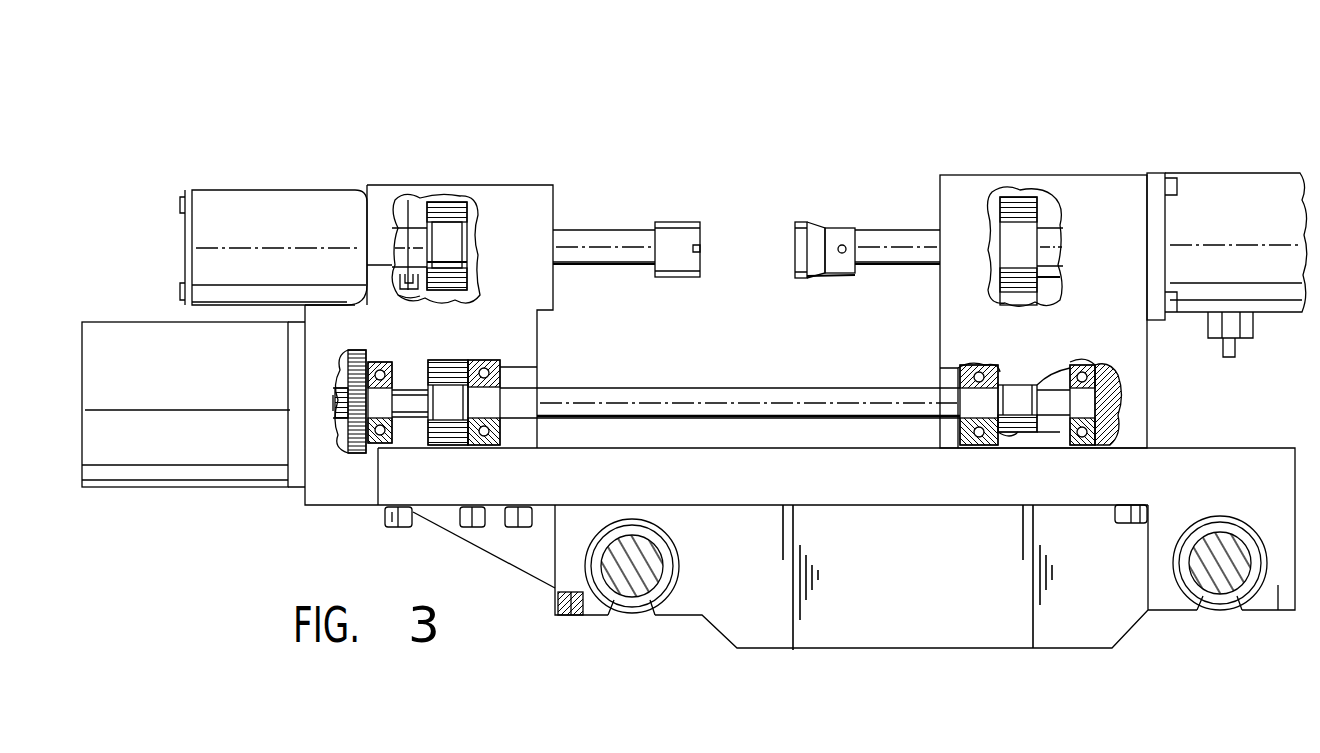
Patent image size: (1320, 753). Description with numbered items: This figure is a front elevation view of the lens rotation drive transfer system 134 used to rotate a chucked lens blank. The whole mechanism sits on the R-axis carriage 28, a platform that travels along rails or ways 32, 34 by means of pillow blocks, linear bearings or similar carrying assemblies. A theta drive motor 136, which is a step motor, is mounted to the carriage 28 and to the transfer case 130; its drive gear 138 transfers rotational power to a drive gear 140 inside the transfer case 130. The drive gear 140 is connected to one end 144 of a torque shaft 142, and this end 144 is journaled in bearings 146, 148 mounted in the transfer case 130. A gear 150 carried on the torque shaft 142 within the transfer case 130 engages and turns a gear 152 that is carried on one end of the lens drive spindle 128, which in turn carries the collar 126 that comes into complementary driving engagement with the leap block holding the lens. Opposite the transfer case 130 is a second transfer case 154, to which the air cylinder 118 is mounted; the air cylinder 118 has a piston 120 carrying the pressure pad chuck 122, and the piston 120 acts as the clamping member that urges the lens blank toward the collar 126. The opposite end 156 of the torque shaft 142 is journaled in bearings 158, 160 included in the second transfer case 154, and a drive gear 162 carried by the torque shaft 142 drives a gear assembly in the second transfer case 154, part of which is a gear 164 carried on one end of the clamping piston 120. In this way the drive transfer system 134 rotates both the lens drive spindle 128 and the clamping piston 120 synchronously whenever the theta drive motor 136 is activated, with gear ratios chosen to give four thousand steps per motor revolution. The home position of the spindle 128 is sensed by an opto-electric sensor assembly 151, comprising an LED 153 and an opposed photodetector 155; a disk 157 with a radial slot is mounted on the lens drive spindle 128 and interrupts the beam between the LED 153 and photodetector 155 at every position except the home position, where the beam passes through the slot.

The R-axis carriage 28 is at (347, 508).
The way 32 is at (630, 597).
The way 34 is at (1220, 583).
The air cylinder 118 is at (1223, 177).
The piston 120 is at (887, 230).
The pressure pad chuck 122 is at (817, 226).
The collar 126 is at (674, 222).
The lens drive spindle 128 is at (583, 230).
The transfer case 130 is at (514, 186).
The lens rotation drive transfer system 134 is at (876, 114).
The theta drive motor 136 is at (180, 488).
The drive gear 138 is at (343, 420).
The drive gear 140 is at (355, 352).
The torque shaft 142 is at (598, 363).
The end of torque shaft 144 is at (422, 430).
The bearing 146 is at (382, 452).
The bearing 148 is at (475, 358).
The gear 150 is at (453, 450).
The opto-electric sensor assembly 151 is at (402, 309).
The gear 152 is at (453, 201).
The LED 153 is at (403, 282).
The second transfer case 154 is at (1110, 174).
The photodetector 155 is at (427, 282).
The opposite end of torque shaft 156 is at (1058, 443).
The disk 157 is at (410, 222).
The bearing 158 is at (970, 447).
The bearing 160 is at (1097, 450).
The drive gear 162 is at (1013, 443).
The gear 164 is at (1017, 198).